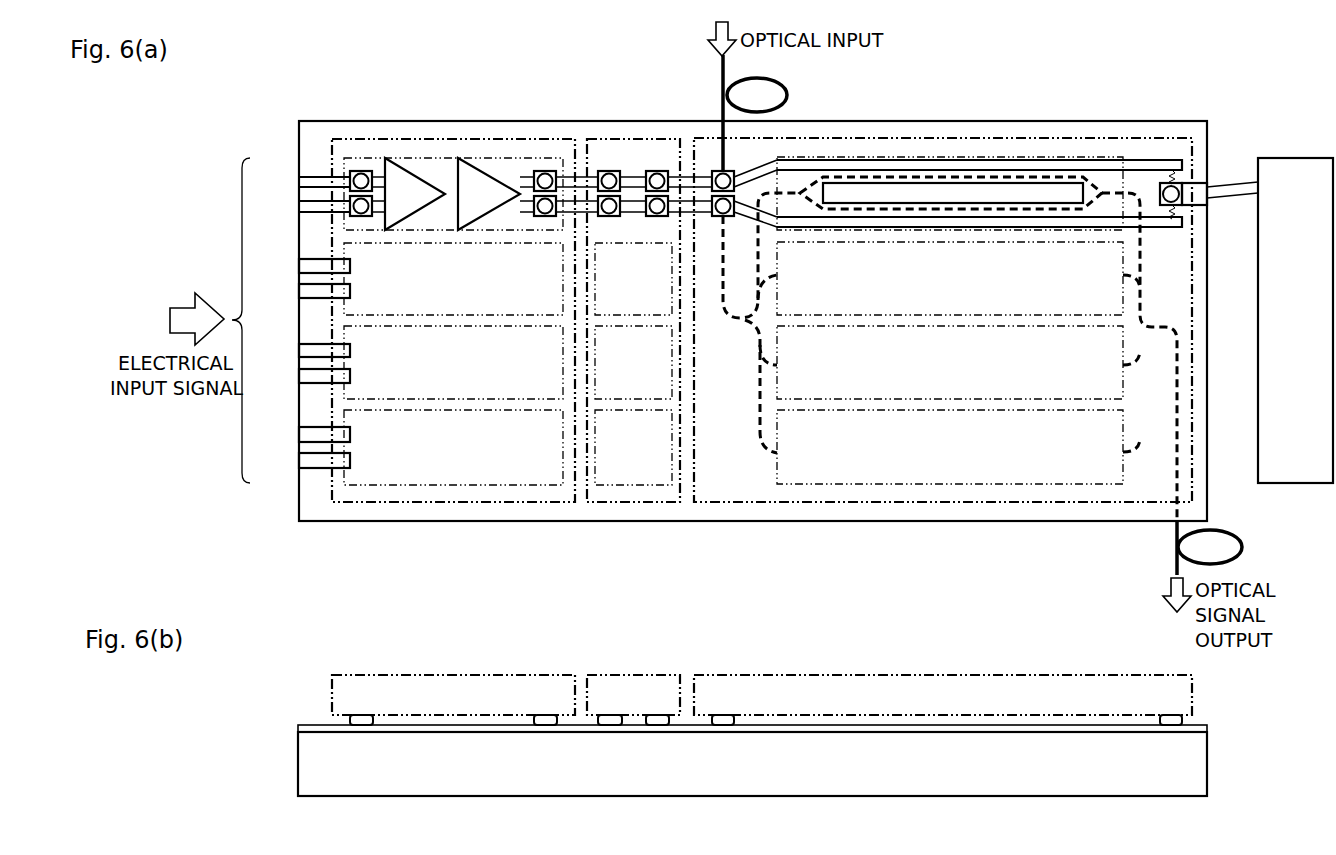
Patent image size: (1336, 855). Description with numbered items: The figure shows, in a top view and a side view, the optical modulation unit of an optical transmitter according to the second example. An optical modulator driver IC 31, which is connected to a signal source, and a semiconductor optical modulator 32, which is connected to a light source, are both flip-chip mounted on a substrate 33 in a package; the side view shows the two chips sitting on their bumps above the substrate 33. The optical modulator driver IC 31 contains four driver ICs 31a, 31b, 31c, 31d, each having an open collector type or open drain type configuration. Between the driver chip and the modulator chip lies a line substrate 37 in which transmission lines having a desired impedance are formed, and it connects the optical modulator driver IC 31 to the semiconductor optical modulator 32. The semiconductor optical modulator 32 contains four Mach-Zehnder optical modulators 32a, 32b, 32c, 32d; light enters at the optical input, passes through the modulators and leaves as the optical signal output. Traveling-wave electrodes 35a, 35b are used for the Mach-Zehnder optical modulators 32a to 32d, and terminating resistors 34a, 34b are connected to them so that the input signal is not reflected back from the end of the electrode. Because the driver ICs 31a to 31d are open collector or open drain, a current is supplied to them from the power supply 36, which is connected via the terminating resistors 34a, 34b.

In FIG. 6A, the optical modulator driver IC 31 is at (455, 138).
In FIG. 6B, the optical modulator driver IC 31 is at (455, 676).
In FIG. 6A, the driver IC 31a is at (344, 158).
In FIG. 6A, the driver IC 31b is at (344, 242).
In FIG. 6A, the driver IC 31c is at (344, 325).
In FIG. 6A, the driver IC 31d is at (344, 408).
In FIG. 6A, the line substrate 37 is at (635, 138).
In FIG. 6B, the line substrate 37 is at (635, 676).
In FIG. 6A, the semiconductor optical modulator 32 is at (944, 138).
In FIG. 6B, the semiconductor optical modulator 32 is at (944, 676).
In FIG. 6A, the Mach-Zehnder optical modulator 32a is at (1118, 152).
In FIG. 6A, the Mach-Zehnder optical modulator 32b is at (1120, 305).
In FIG. 6A, the Mach-Zehnder optical modulator 32c is at (1120, 385).
In FIG. 6A, the Mach-Zehnder optical modulator 32d is at (1120, 467).
In FIG. 6B, the substrate 33 is at (1207, 762).
In FIG. 6A, the terminating resistor 34a is at (1176, 180).
In FIG. 6A, the terminating resistor 34b is at (1176, 208).
In FIG. 6A, the traveling-wave electrode 35a is at (1172, 160).
In FIG. 6A, the traveling-wave electrode 35b is at (1172, 230).
In FIG. 6A, the power supply 36 is at (1296, 158).